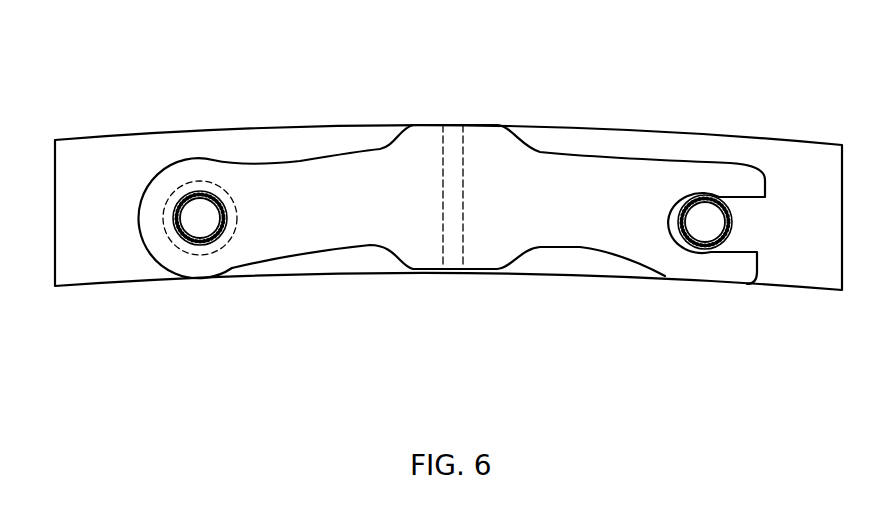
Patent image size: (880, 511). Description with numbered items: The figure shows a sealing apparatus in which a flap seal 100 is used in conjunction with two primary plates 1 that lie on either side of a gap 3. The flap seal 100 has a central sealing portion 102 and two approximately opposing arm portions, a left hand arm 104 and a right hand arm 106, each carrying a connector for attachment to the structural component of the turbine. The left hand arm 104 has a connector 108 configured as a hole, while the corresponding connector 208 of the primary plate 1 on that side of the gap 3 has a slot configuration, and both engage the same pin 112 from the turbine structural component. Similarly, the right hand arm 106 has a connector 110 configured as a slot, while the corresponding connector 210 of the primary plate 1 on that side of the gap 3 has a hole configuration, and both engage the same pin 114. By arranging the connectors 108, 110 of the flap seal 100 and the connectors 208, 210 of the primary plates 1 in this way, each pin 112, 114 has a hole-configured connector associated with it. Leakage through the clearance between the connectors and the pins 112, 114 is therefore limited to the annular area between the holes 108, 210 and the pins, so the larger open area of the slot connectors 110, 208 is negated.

The primary plate 1 is at (112, 105).
The gap 3 is at (452, 260).
The flap seal 100 is at (451, 200).
The central sealing portion 102 is at (400, 163).
The left hand arm 104 is at (306, 236).
The right hand arm 106 is at (556, 237).
The connector 108 is at (208, 243).
The connector 110 is at (732, 255).
The pin 112 is at (201, 212).
The pin 114 is at (705, 220).
The connector 208 is at (178, 245).
The connector 210 is at (687, 252).